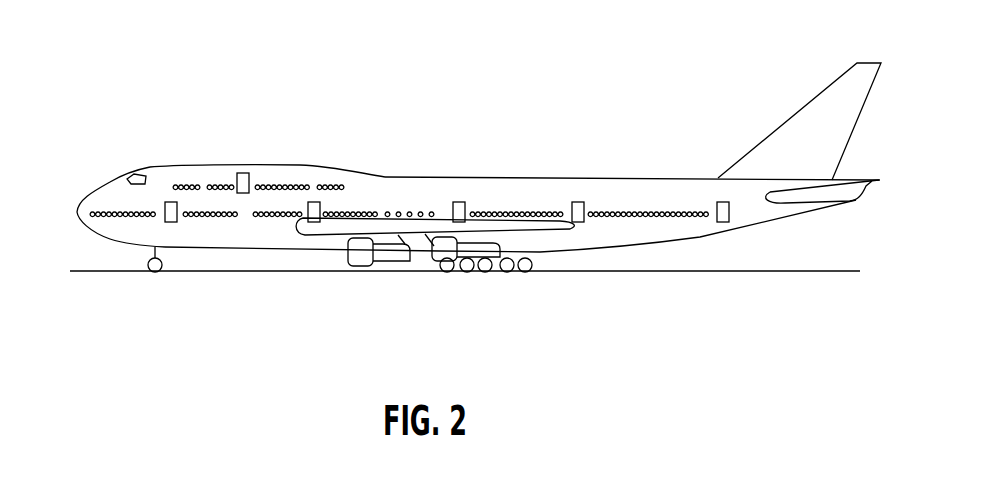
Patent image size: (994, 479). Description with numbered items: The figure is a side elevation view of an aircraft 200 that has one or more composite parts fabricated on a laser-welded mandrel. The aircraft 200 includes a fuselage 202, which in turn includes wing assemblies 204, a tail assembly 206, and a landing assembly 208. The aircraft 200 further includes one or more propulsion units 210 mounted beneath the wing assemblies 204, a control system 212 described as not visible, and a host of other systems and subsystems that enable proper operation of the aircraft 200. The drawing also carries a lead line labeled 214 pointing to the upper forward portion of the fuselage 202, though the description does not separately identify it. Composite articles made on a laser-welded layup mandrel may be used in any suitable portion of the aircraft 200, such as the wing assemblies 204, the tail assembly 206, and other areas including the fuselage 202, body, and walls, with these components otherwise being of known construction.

The aircraft 200 is at (131, 56).
The fuselage 202 is at (600, 249).
The wing assemblies 204 is at (318, 231).
The tail assembly 206 is at (767, 126).
The landing assembly 208 is at (484, 278).
The propulsion units 210 is at (366, 266).
The control system 212 is at (89, 234).
The upper deck 214 is at (345, 143).